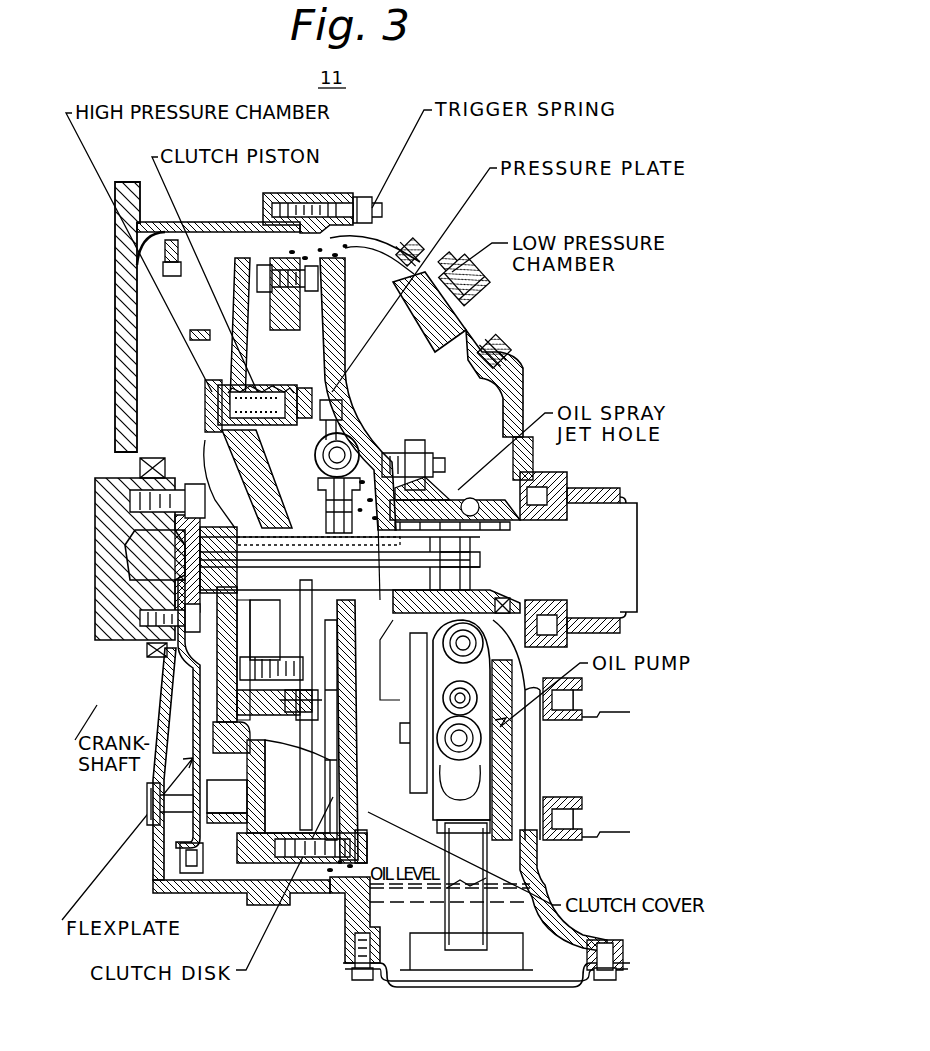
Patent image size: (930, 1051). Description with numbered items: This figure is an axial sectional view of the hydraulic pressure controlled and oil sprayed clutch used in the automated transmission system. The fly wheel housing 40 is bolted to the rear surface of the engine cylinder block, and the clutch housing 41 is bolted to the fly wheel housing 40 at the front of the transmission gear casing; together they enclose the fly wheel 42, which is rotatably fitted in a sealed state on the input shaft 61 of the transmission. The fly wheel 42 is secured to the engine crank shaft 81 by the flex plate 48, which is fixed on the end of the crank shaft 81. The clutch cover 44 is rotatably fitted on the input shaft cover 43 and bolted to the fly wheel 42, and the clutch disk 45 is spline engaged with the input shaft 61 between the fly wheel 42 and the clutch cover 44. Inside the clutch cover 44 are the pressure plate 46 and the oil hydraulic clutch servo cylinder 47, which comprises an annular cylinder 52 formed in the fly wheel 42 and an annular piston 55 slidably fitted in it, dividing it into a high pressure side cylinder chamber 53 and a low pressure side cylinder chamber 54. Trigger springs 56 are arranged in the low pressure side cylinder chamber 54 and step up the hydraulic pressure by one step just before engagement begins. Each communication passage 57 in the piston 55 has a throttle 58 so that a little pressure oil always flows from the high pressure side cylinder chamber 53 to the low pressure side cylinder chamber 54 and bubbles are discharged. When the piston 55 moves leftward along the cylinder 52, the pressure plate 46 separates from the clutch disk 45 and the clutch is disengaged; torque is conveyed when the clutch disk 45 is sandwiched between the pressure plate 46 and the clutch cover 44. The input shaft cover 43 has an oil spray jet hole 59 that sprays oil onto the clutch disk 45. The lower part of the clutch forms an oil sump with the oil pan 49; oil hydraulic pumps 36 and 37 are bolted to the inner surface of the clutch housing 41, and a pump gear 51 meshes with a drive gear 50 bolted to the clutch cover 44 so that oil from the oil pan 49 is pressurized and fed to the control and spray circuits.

The oil hydraulic pump 36 is at (469, 795).
The oil hydraulic pump 37 is at (505, 605).
The fly wheel housing 40 is at (224, 230).
The clutch housing 41 is at (528, 377).
The fly wheel 42 is at (130, 462).
The input shaft cover 43 is at (468, 486).
The clutch cover 44 is at (396, 431).
The clutch disk 45 is at (320, 478).
The pressure plate 46 is at (268, 320).
The oil hydraulic clutch servo cylinder 47 is at (222, 409).
The flex plate 48 is at (194, 351).
The oil pan 49 is at (418, 988).
The drive gear 50 is at (440, 450).
The pump gear 51 is at (416, 802).
The annular cylinder 52 is at (240, 392).
The high pressure side cylinder chamber 53 is at (224, 433).
The low pressure side cylinder chamber 54 is at (292, 692).
The annular piston 55 is at (262, 318).
The trigger springs 56 is at (242, 446).
The communication passage 57 is at (288, 706).
The throttle 58 is at (237, 693).
The oil spray jet hole 59 is at (440, 478).
The input shaft 61 is at (606, 563).
The crank shaft 81 is at (112, 619).